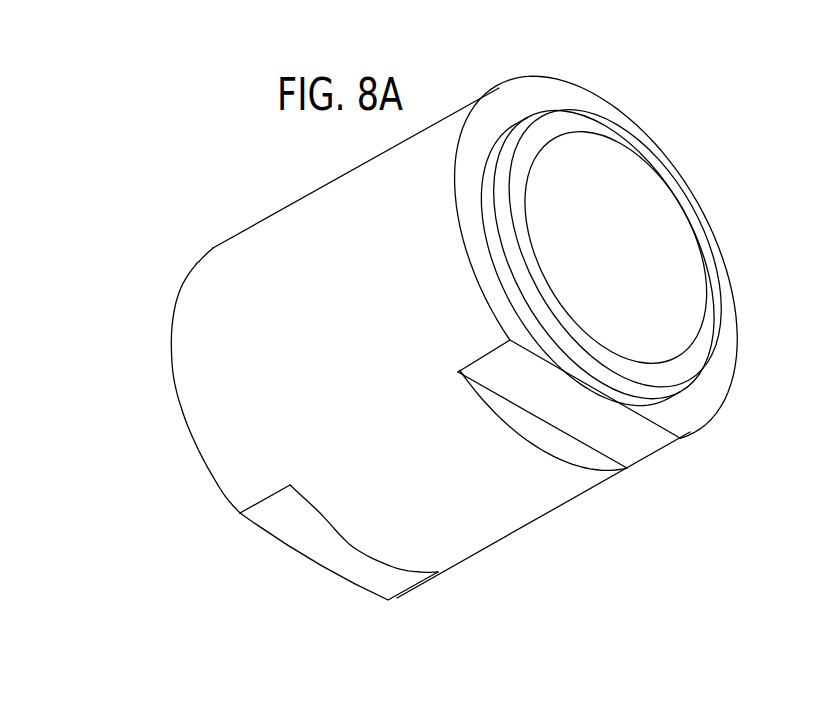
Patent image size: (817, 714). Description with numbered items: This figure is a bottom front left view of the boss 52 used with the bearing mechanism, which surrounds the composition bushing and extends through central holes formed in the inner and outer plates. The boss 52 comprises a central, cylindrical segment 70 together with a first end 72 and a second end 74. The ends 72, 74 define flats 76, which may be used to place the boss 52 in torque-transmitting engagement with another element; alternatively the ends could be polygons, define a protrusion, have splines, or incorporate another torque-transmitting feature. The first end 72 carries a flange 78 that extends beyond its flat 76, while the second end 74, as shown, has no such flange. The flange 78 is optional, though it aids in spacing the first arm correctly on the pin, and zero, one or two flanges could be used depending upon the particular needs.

The boss 52 is at (703, 144).
The central cylindrical segment 70 is at (295, 247).
The first end 72 is at (723, 367).
The second end 74 is at (185, 427).
The flats 76 is at (640, 437).
The flange 78 is at (692, 227).